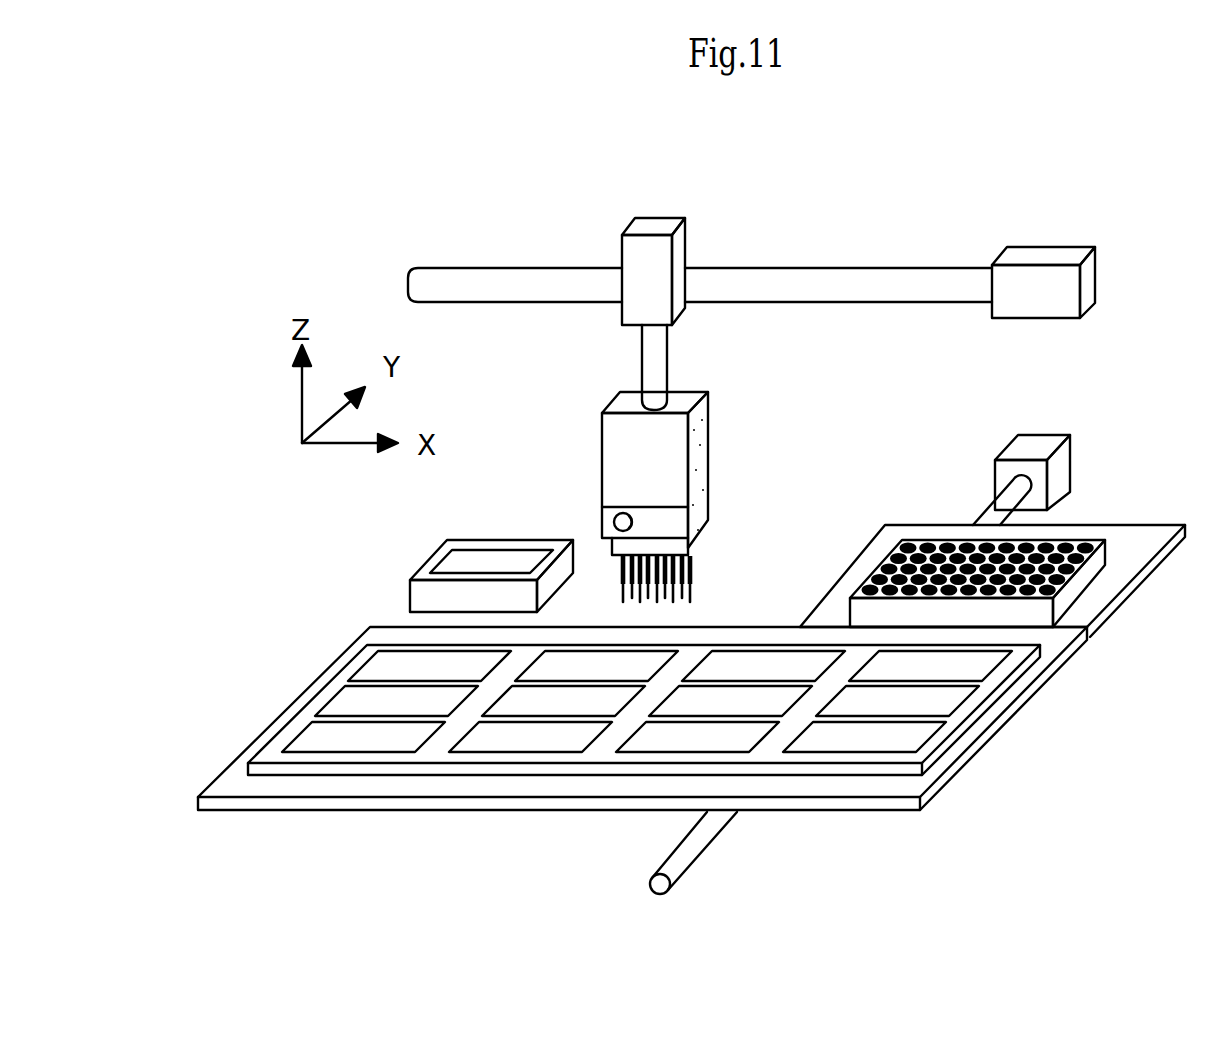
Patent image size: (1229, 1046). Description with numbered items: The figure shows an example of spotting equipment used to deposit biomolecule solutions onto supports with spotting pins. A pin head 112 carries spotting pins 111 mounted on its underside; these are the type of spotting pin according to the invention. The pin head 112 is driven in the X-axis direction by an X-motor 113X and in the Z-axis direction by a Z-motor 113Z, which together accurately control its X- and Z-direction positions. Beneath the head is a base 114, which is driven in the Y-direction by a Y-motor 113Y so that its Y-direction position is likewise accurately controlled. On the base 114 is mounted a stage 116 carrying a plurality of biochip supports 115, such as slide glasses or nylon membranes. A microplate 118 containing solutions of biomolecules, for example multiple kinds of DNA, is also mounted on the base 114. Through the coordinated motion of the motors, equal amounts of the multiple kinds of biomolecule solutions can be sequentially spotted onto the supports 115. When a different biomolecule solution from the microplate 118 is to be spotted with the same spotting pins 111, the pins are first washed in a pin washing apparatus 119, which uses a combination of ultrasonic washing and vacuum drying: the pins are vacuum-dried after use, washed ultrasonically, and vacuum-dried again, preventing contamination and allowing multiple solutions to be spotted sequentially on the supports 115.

The spotting pins 111 is at (695, 578).
The pin head 112 is at (695, 467).
The X-motor 113X is at (1020, 248).
The Y-motor 113Y is at (1018, 447).
The Z-motor 113Z is at (678, 248).
The base 114 is at (302, 805).
The biochip supports 115 is at (475, 742).
The stage 116 is at (828, 772).
The microplate 118 is at (1067, 597).
The pin washing apparatus 119 is at (433, 578).